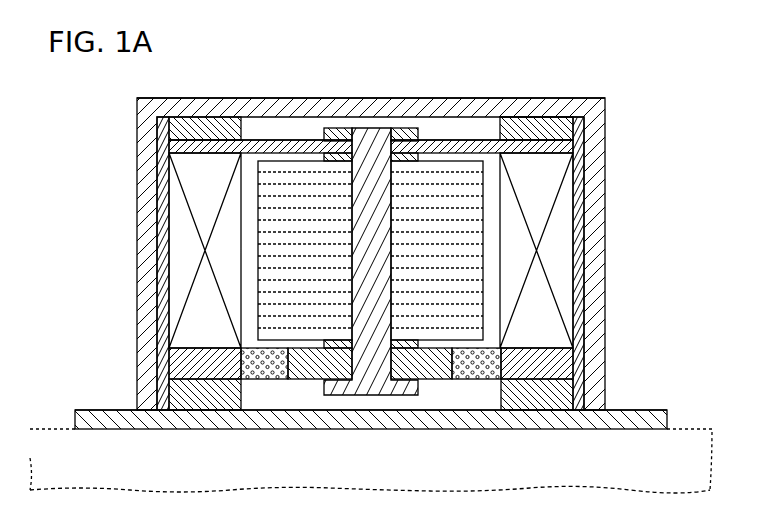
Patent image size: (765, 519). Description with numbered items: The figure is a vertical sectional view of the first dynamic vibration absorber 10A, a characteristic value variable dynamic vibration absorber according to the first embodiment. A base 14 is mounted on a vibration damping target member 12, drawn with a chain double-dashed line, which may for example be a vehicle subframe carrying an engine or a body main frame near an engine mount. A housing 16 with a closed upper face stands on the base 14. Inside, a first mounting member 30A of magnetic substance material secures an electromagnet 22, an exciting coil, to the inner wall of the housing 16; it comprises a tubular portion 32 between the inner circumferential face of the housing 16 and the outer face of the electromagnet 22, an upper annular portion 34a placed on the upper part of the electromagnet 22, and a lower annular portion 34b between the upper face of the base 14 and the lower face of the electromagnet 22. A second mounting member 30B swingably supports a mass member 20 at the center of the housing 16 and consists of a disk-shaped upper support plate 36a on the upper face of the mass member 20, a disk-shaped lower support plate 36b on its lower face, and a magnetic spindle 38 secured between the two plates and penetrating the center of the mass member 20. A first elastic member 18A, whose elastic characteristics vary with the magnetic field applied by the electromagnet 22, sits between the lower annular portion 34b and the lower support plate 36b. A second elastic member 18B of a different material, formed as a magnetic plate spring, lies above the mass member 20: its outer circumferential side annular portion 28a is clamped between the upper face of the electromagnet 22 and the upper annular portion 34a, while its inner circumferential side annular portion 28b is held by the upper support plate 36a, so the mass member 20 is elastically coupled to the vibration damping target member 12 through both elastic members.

The first dynamic vibration absorber 10A is at (95, 84).
The vibration damping target member 12 is at (52, 429).
The base 14 is at (640, 410).
The housing 16 is at (193, 100).
The first elastic member 18A is at (487, 380).
The second elastic member 18B is at (288, 140).
The mass member 20 is at (440, 173).
The electromagnet 22 is at (557, 237).
The outer circumferential side annular portion 28a is at (519, 117).
The inner circumferential side annular portion 28b is at (335, 130).
The first mounting member 30A is at (566, 114).
The second mounting member 30B is at (305, 380).
The tubular portion 32 is at (574, 162).
The upper annular portion 34a is at (545, 137).
The lower annular portion 34b is at (543, 400).
The upper support plate 36a is at (403, 133).
The lower support plate 36b is at (432, 368).
The spindle 38 is at (366, 395).